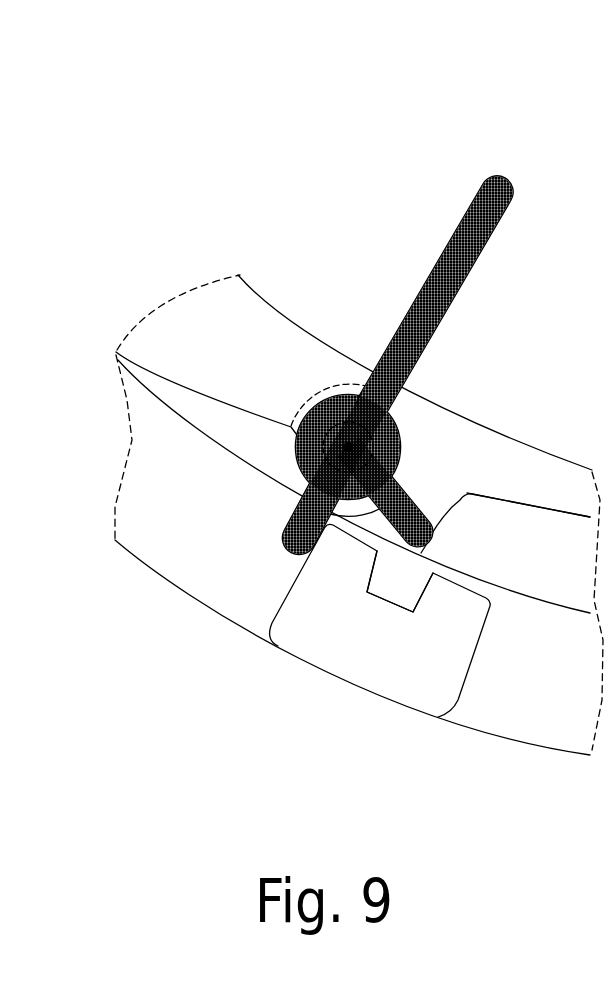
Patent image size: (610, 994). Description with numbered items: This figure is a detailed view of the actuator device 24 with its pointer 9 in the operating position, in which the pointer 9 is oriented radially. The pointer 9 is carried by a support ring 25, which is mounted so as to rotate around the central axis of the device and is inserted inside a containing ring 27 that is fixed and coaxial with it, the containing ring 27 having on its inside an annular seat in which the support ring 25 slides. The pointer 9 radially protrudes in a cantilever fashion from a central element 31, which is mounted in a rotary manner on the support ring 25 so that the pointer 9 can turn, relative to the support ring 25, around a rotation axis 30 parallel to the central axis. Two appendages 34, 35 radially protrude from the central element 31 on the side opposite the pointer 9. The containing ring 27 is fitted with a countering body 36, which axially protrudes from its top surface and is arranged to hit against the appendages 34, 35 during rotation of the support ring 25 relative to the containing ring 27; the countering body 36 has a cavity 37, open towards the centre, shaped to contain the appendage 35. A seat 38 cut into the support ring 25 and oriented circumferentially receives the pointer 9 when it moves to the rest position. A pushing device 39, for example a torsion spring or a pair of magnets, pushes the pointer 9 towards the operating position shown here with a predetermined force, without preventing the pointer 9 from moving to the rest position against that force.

The pointer 9 is at (482, 230).
The actuator device 24 is at (148, 119).
The support ring 25 is at (254, 330).
The containing ring 27 is at (552, 700).
The rotation axis 30 is at (340, 450).
The central element 31 is at (333, 392).
The appendage 34 is at (283, 552).
The appendage 35 is at (413, 513).
The countering body 36 is at (353, 637).
The cavity 37 is at (400, 597).
The seat 38 is at (563, 506).
The pushing device 39 is at (373, 368).